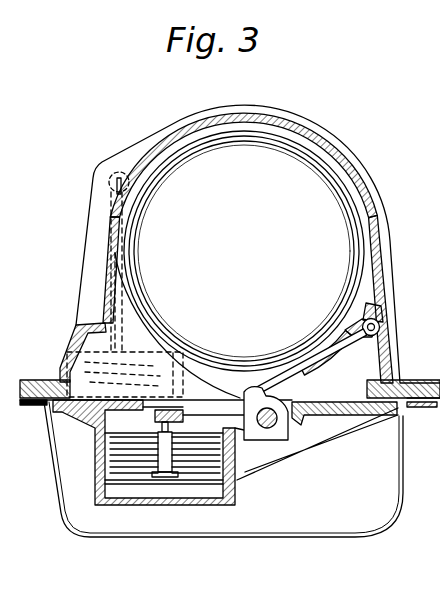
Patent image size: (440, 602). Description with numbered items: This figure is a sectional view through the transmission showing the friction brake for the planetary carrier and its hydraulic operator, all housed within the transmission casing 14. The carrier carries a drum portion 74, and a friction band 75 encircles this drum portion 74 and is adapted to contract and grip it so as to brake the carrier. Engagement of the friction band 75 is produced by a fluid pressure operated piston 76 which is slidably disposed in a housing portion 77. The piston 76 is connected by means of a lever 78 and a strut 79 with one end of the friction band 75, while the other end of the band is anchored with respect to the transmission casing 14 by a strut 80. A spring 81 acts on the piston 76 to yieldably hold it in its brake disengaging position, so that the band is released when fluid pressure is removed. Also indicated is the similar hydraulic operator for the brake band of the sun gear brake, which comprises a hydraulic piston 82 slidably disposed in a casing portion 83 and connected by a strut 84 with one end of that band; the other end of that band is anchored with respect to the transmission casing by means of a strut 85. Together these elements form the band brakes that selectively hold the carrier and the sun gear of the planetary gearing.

The transmission casing 14 is at (192, 128).
The drum portion 74 is at (350, 176).
The friction band 75 is at (360, 291).
The fluid pressure operated piston 76 is at (205, 486).
The housing portion 77 is at (236, 491).
The lever 78 is at (240, 437).
The strut 79 is at (285, 381).
The strut 80 is at (343, 345).
The spring 81 is at (108, 461).
The hydraulic piston 82 is at (72, 384).
The casing portion 83 is at (180, 352).
The strut 84 is at (108, 288).
The strut 85 is at (109, 199).